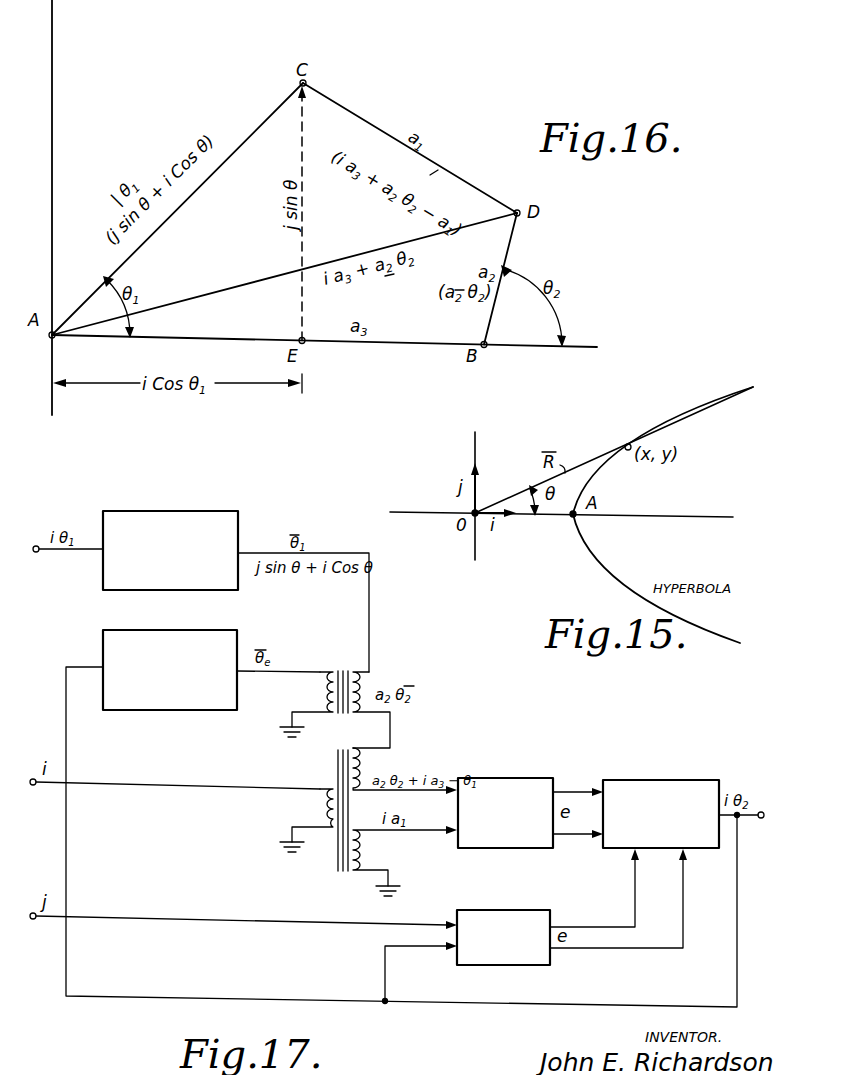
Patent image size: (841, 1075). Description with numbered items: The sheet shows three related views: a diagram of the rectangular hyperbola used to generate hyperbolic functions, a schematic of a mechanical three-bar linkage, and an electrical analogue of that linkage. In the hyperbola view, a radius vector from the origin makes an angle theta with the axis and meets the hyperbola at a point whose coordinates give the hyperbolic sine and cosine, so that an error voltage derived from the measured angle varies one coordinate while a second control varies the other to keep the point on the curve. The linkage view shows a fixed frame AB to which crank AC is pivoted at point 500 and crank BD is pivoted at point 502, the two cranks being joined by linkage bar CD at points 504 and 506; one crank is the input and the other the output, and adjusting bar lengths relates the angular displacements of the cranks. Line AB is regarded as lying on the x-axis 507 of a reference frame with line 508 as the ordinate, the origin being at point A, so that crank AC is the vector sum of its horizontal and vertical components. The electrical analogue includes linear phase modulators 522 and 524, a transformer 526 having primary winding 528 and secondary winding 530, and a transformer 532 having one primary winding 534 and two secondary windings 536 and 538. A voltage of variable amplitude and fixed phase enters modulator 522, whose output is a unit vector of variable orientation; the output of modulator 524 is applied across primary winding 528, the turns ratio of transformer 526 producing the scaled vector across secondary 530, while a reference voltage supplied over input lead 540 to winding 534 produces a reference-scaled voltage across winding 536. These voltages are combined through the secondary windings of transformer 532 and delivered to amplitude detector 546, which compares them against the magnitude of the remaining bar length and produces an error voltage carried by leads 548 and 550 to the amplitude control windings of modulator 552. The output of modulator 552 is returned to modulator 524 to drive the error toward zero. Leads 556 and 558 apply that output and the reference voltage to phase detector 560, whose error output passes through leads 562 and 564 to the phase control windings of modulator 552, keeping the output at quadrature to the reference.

In FIG. 16, the pivot point 500 is at (48, 340).
In FIG. 16, the pivot point 502 is at (483, 350).
In FIG. 16, the connection point 504 is at (308, 86).
In FIG. 16, the connection point 506 is at (521, 217).
In FIG. 16, the x-axis 507 is at (590, 347).
In FIG. 16, the ordinate line 508 is at (52, 40).
In FIG. 17, the linear phase modulator 522 is at (120, 511).
In FIG. 17, the linear phase modulator 524 is at (125, 630).
In FIG. 17, the transformer 526 is at (343, 667).
In FIG. 17, the primary winding 528 is at (322, 688).
In FIG. 17, the secondary winding 530 is at (365, 680).
In FIG. 17, the transformer 532 is at (339, 875).
In FIG. 17, the primary winding 534 is at (322, 805).
In FIG. 17, the secondary winding 536 is at (362, 757).
In FIG. 17, the secondary winding 538 is at (362, 848).
In FIG. 17, the input lead for signal i 540 is at (112, 783).
In FIG. 17, the amplitude detector 546 is at (493, 778).
In FIG. 17, the lead 548 is at (563, 835).
In FIG. 17, the lead 550 is at (568, 791).
In FIG. 17, the phase and amplitude modulator 552 is at (640, 780).
In FIG. 17, the lead 556 is at (385, 968).
In FIG. 17, the lead 558 is at (112, 916).
In FIG. 17, the phase detector 560 is at (490, 910).
In FIG. 17, the lead 562 is at (567, 926).
In FIG. 17, the lead 564 is at (582, 950).